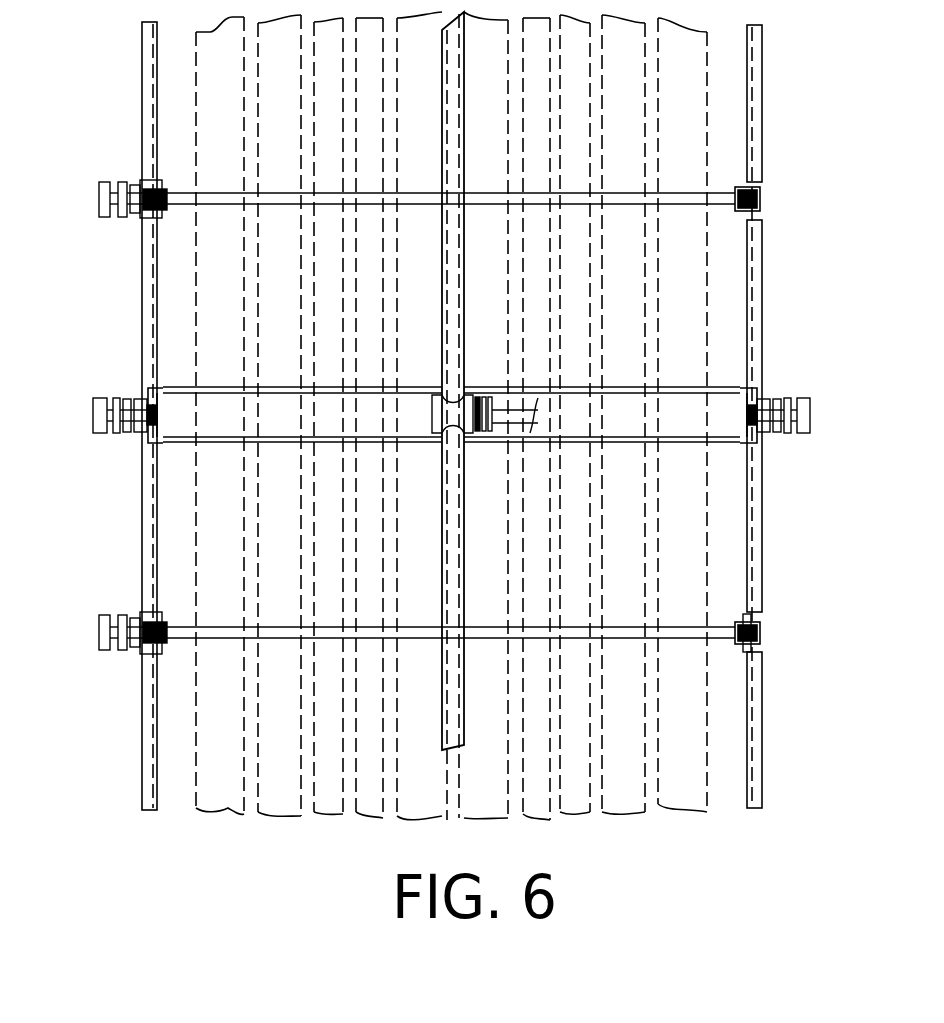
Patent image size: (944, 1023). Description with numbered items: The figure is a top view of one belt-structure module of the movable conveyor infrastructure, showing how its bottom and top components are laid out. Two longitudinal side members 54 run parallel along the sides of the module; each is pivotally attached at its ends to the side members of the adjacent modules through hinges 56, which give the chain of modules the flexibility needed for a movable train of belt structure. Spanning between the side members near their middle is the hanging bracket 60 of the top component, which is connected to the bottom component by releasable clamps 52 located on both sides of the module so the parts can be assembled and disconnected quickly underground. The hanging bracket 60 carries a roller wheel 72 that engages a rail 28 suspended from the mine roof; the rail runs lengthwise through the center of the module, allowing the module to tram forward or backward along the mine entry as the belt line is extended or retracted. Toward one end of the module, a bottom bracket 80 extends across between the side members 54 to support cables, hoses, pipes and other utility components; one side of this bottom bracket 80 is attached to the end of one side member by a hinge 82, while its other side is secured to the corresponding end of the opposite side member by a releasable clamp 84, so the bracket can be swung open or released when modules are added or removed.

The rail 28 is at (452, 547).
The releasable clamps 52 is at (102, 417).
The longitudinal side members 54 is at (148, 331).
The hinges 56 is at (760, 200).
The hanging bracket 60 is at (302, 412).
The roller wheel 72 is at (435, 422).
The bottom bracket 80 is at (230, 640).
The hinge 82 is at (745, 642).
The releasable clamp 84 is at (107, 632).